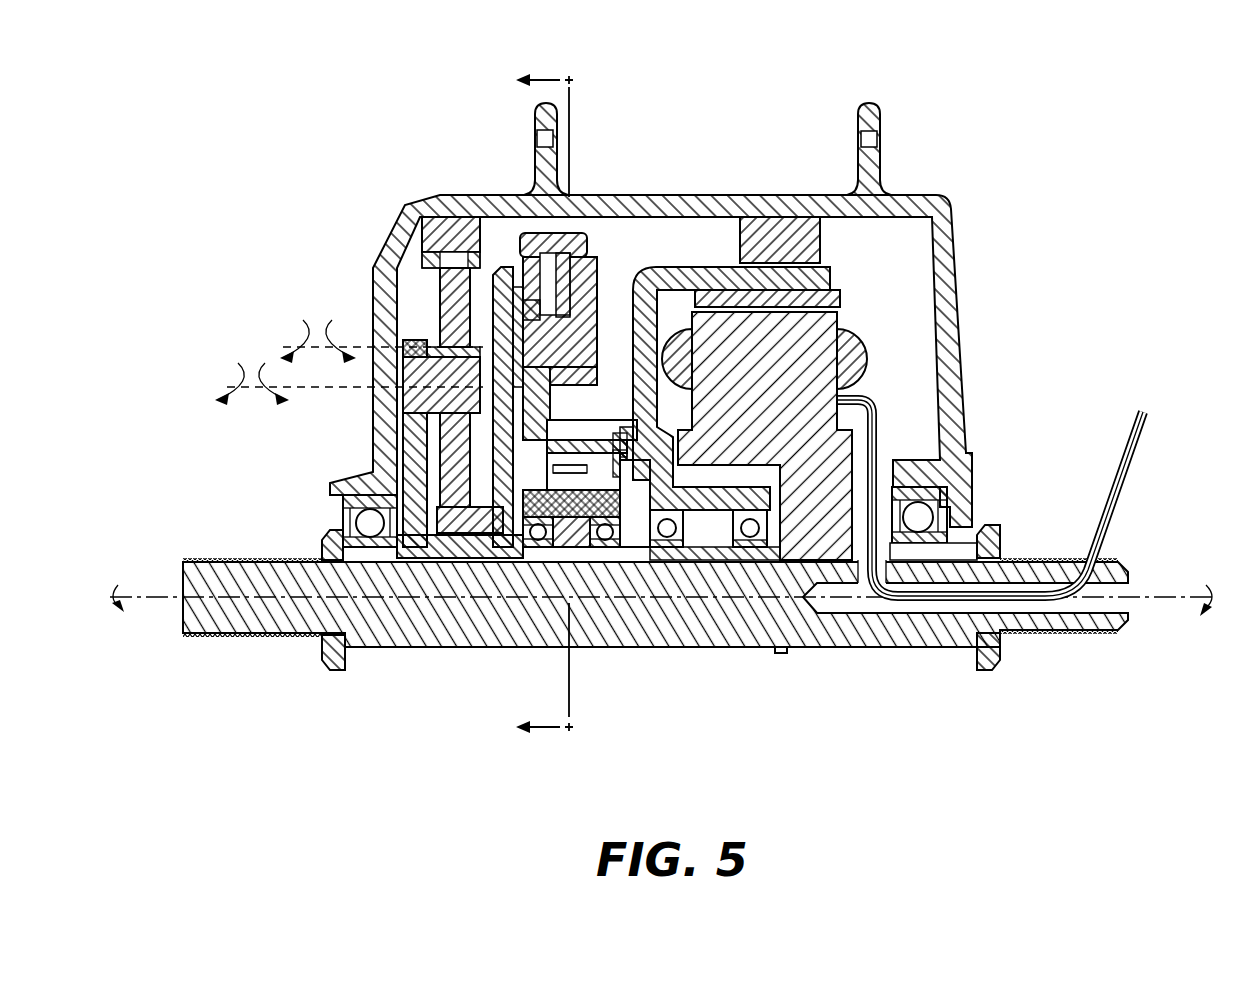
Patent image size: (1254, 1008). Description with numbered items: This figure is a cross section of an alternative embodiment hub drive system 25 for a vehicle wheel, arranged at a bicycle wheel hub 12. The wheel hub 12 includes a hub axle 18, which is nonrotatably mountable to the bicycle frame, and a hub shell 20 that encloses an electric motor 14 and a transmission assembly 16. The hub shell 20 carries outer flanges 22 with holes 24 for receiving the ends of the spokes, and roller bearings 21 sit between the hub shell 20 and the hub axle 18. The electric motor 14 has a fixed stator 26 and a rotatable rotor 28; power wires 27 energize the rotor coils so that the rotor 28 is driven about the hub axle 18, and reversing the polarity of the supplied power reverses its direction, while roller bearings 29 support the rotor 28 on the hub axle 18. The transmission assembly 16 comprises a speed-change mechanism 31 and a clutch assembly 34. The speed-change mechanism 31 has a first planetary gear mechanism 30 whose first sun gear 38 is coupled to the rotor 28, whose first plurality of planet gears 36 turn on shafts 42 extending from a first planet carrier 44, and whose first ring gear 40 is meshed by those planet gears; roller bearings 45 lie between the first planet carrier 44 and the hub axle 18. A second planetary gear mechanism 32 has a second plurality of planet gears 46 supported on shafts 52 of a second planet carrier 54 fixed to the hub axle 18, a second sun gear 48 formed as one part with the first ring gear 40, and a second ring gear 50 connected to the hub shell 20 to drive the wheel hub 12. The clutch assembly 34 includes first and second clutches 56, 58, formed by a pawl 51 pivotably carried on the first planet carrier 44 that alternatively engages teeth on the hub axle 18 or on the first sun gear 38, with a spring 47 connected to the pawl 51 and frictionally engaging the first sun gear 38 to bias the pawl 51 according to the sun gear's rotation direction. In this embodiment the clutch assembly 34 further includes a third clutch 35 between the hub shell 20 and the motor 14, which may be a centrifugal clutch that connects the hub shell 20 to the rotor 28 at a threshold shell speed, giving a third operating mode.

The bicycle wheel hub 12 is at (1022, 168).
The electric motor 14 is at (902, 335).
The transmission assembly 16 is at (337, 214).
The hub axle 18 is at (1078, 640).
The hub shell 20 is at (455, 270).
The roller bearings 21 is at (368, 527).
The outer flanges 22 is at (868, 110).
The holes 24 is at (877, 140).
The hub drive system 25 is at (1024, 277).
The stator 26 is at (840, 330).
The power wires 27 is at (1115, 520).
The rotor 28 is at (812, 290).
The roller bearings 29 is at (668, 540).
The first planetary gear mechanism 30 is at (656, 250).
The speed-change mechanism 31 is at (497, 238).
The second planetary gear mechanism 32 is at (412, 278).
The clutch assembly 34 is at (634, 522).
The third clutch 35 is at (780, 240).
The first plurality of planet gears 36 is at (592, 265).
The first sun gear 38 is at (594, 428).
The first ring gear 40 is at (570, 262).
The shafts 42 is at (503, 280).
The first planet carrier 44 is at (525, 505).
The roller bearings 45 is at (538, 535).
The second plurality of planet gears 46 is at (447, 300).
The spring 47 is at (624, 455).
The second sun gear 48 is at (445, 527).
The second ring gear 50 is at (432, 232).
The pawl 51 is at (570, 525).
The shafts 52 is at (420, 385).
The second planet carrier 54 is at (405, 485).
The first clutch 56 is at (580, 487).
The second clutch 58 is at (603, 440).